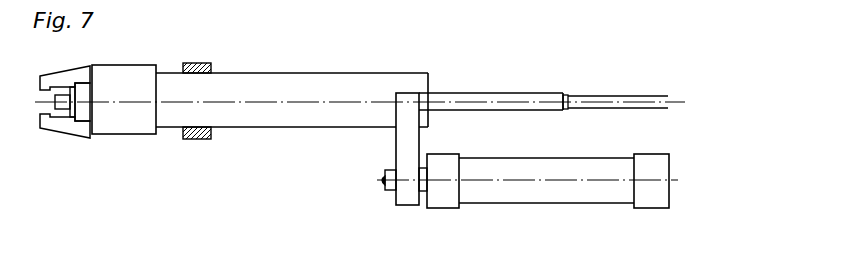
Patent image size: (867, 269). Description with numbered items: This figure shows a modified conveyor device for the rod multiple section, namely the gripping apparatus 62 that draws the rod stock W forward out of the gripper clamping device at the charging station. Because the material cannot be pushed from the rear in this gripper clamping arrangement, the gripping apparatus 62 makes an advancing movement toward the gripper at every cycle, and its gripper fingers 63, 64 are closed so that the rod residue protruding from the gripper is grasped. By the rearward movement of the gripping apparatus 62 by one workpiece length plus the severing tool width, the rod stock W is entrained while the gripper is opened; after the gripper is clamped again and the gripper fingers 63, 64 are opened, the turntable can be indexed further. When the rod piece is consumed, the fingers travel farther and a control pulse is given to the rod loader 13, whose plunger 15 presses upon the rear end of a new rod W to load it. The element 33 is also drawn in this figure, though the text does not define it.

The rod loader 13 is at (649, 93).
The plunger 15 is at (591, 97).
The cylinder 33 is at (514, 197).
The gripping apparatus 62 is at (118, 135).
The gripper finger 63 is at (62, 80).
The gripper finger 64 is at (57, 116).
The rod stock W is at (498, 93).